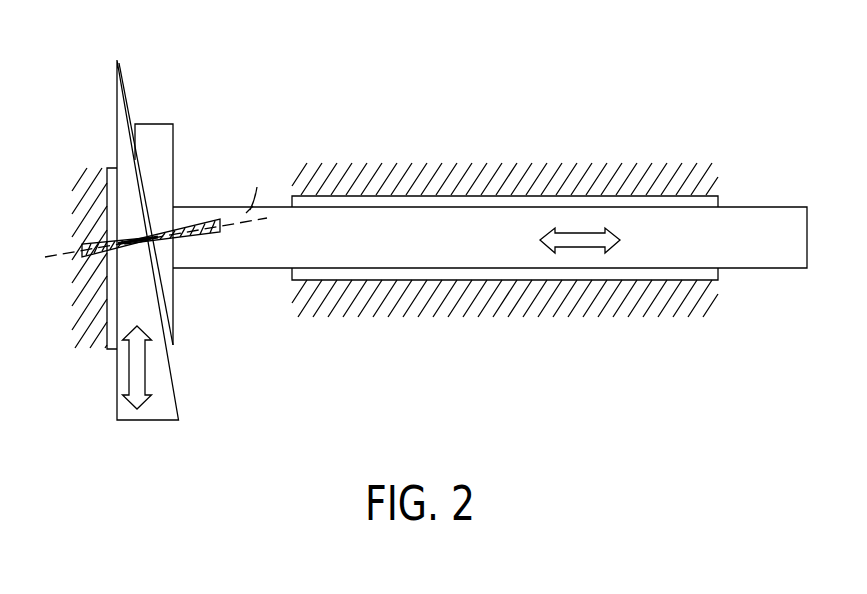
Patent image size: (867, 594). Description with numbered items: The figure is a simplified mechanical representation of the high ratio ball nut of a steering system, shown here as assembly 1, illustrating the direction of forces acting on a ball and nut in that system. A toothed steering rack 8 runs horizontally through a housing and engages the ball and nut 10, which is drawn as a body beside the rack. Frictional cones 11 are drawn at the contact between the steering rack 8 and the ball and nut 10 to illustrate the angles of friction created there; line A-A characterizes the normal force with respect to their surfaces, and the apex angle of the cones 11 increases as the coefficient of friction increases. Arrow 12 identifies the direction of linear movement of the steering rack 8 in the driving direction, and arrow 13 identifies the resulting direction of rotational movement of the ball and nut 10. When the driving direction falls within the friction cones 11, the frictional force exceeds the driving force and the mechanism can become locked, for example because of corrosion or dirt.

The cutting device 1 is at (702, 118).
The toothed steering rack 8 is at (758, 262).
The ball and nut 10 is at (166, 415).
The frictional cones 11 is at (82, 257).
The arrow 12 is at (622, 240).
The arrow 13 is at (135, 367).